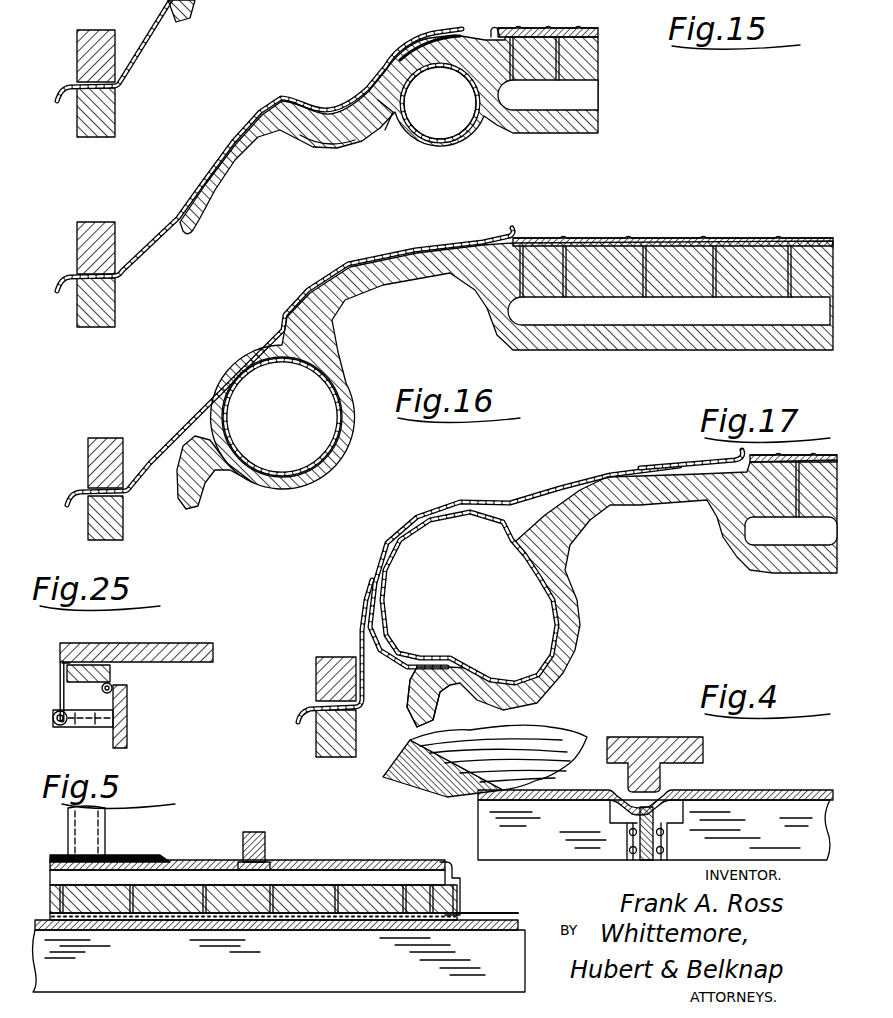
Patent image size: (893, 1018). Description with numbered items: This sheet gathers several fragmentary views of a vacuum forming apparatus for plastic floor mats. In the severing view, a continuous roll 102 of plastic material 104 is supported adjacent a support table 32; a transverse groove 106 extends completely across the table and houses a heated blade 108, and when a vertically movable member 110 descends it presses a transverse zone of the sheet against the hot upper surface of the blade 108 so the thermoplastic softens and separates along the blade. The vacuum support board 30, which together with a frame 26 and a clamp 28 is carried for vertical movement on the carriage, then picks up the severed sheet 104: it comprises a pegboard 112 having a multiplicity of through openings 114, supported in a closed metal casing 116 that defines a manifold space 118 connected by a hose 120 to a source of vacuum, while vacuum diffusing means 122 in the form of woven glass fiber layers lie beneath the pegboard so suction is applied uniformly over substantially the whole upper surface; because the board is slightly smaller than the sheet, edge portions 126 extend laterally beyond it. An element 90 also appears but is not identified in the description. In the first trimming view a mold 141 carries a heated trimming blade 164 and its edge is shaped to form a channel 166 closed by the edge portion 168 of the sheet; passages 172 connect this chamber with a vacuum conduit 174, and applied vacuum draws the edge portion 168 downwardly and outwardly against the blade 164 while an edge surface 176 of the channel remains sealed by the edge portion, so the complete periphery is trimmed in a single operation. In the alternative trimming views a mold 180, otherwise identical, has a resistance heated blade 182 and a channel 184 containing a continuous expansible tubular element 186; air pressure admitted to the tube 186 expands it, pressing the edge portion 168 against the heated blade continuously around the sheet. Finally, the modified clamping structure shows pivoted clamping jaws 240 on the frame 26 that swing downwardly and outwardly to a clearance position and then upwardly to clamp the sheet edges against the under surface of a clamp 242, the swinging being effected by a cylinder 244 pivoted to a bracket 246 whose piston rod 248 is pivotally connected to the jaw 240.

In FIG. 15, the frame 26 is at (116, 97).
In FIG. 16, the frame 26 is at (88, 536).
In FIG. 17, the frame 26 is at (316, 747).
In FIG. 15, the clamp 28 is at (77, 56).
In FIG. 16, the clamp 28 is at (88, 456).
In FIG. 17, the clamp 28 is at (316, 673).
In FIG. 5, the vacuum support board 30 is at (360, 846).
In FIG. 4, the support table 32 is at (556, 851).
In FIG. 5, the support table 32 is at (513, 940).
In FIG. 5, the post 90 is at (105, 827).
In FIG. 4, the continuous roll 102 is at (468, 766).
In FIG. 15, the plastic material 104 is at (559, 29).
In FIG. 16, the plastic material 104 is at (589, 240).
In FIG. 17, the plastic material 104 is at (767, 460).
In FIG. 4, the plastic material 104 is at (773, 790).
In FIG. 5, the plastic material 104 is at (370, 930).
In FIG. 4, the transverse groove 106 is at (610, 814).
In FIG. 4, the heated blade 108 is at (673, 822).
In FIG. 4, the vertically movable member 110 is at (631, 737).
In FIG. 5, the pegboard 112 is at (165, 896).
In FIG. 5, the through openings 114 is at (400, 888).
In FIG. 5, the closed casing 116 is at (430, 882).
In FIG. 5, the manifold space 118 is at (288, 881).
In FIG. 5, the hose 120 is at (274, 816).
In FIG. 5, the vacuum diffusing means 122 is at (157, 921).
In FIG. 5, the edge portions 126 is at (488, 918).
In FIG. 15, the mold 141 is at (570, 137).
In FIG. 15, the trimming blade 164 is at (494, 36).
In FIG. 15, the channel 166 is at (350, 150).
In FIG. 15, the edge portion 168 is at (323, 102).
In FIG. 17, the edge portion 168 is at (537, 490).
In FIG. 15, the passages 172 is at (394, 139).
In FIG. 15, the vacuum conduit 174 is at (433, 139).
In FIG. 15, the edge surface 176 is at (413, 45).
In FIG. 16, the mold 180 is at (628, 352).
In FIG. 17, the mold 180 is at (735, 455).
In FIG. 16, the resistance heated blade 182 is at (507, 236).
In FIG. 16, the channel 184 is at (338, 385).
In FIG. 17, the channel 184 is at (557, 601).
In FIG. 16, the expansible tubular element 186 is at (258, 466).
In FIG. 17, the expansible tubular element 186 is at (358, 655).
In FIG. 25, the pivoted clamping jaws 240 is at (130, 721).
In FIG. 25, the clamp 242 is at (133, 643).
In FIG. 25, the cylinder 244 is at (93, 727).
In FIG. 25, the bracket 246 is at (57, 667).
In FIG. 25, the piston rod 248 is at (113, 690).